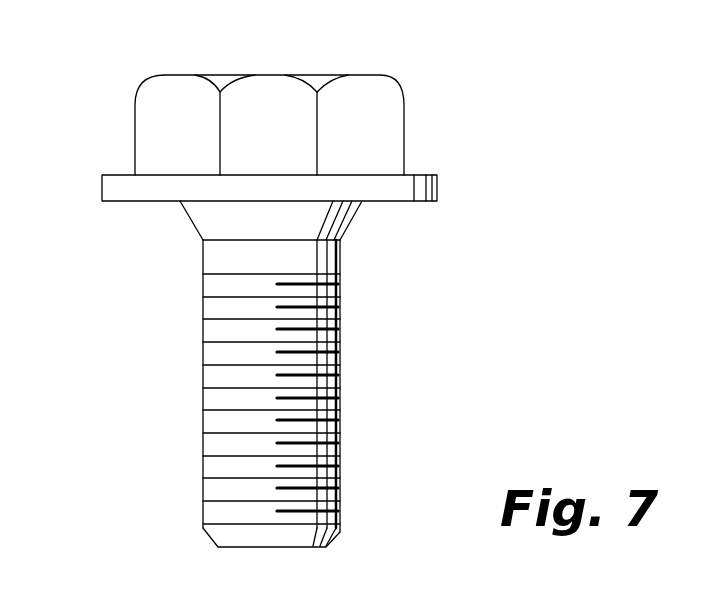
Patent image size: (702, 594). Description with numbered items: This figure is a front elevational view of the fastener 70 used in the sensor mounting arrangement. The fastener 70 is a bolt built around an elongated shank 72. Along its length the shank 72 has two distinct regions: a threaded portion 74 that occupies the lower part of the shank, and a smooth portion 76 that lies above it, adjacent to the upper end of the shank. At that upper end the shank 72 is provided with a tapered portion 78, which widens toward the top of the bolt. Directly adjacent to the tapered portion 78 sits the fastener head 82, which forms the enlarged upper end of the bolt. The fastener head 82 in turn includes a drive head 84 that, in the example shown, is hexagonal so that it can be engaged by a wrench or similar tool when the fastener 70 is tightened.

The fastener 70 is at (140, 92).
The drive head 84 is at (405, 119).
The fastener head 82 is at (440, 184).
The tapered portion 78 is at (355, 222).
The smooth portion 76 is at (340, 260).
The threaded portion 74 is at (339, 357).
The shank 72 is at (337, 538).